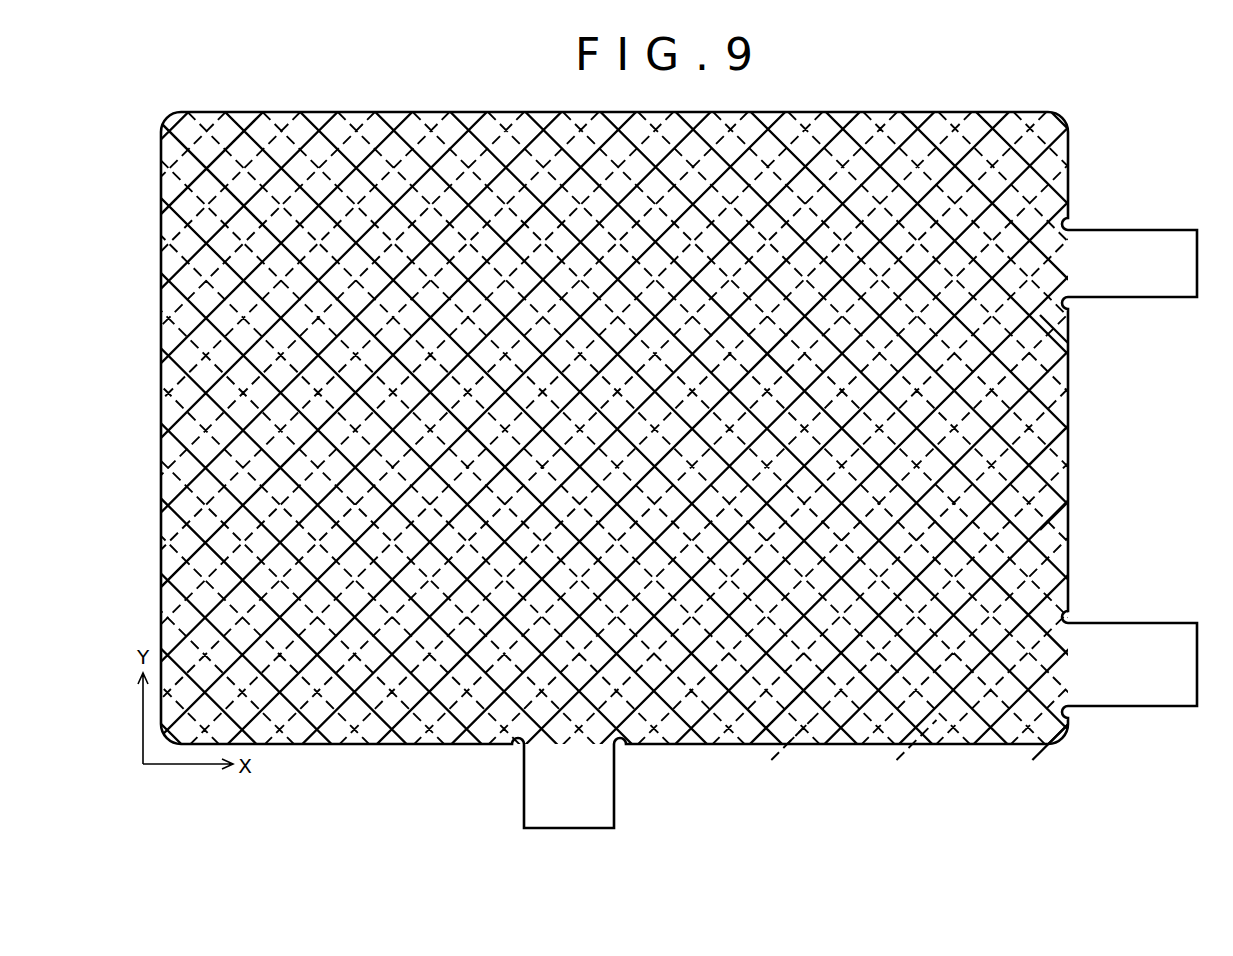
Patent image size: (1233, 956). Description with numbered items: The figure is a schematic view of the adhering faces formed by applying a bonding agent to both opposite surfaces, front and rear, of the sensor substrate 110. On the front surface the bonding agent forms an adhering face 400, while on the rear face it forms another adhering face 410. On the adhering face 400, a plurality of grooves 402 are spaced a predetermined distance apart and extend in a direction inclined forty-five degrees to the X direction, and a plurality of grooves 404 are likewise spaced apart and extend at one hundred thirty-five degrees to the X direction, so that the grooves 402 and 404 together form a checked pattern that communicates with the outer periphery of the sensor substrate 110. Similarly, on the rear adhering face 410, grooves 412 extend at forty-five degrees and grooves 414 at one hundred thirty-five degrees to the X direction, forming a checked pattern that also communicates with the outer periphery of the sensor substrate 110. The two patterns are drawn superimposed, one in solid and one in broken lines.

The sensor substrate 110 is at (1069, 173).
The adhering face 400 is at (1055, 420).
The grooves 402 is at (1050, 518).
The grooves 404 is at (1062, 337).
The adhering face 410 is at (988, 745).
The grooves 412 is at (896, 745).
The grooves 414 is at (785, 745).